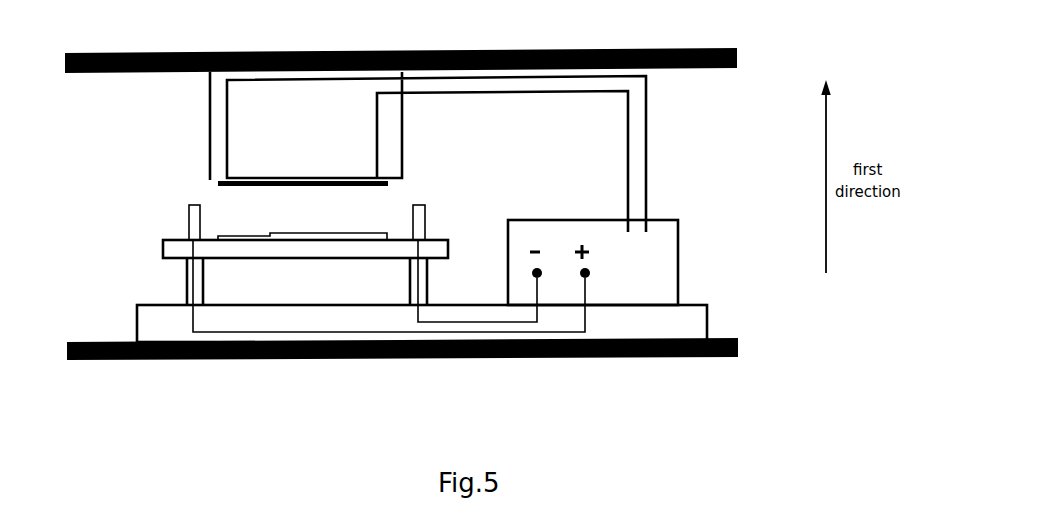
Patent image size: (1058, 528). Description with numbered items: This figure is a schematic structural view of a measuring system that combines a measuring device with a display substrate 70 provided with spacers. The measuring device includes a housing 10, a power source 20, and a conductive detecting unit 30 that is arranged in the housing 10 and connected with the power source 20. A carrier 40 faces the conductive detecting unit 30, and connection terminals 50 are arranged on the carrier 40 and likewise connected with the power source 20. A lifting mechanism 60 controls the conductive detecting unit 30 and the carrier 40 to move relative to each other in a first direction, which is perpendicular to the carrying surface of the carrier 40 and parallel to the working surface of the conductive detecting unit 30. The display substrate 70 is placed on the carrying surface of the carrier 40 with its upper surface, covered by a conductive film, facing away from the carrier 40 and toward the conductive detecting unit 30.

The housing 10 is at (88, 73).
The power source 20 is at (638, 288).
The conductive detecting unit 30 is at (213, 180).
The carrier 40 is at (235, 248).
The connection terminals 50 is at (187, 222).
The lifting mechanism 60 is at (252, 105).
The display substrate 70 is at (283, 232).